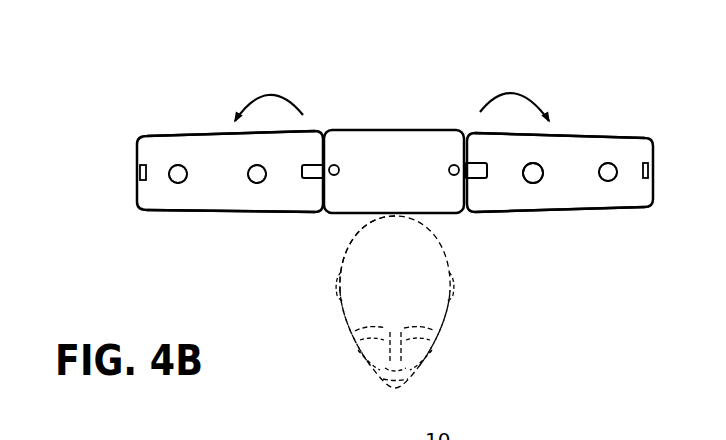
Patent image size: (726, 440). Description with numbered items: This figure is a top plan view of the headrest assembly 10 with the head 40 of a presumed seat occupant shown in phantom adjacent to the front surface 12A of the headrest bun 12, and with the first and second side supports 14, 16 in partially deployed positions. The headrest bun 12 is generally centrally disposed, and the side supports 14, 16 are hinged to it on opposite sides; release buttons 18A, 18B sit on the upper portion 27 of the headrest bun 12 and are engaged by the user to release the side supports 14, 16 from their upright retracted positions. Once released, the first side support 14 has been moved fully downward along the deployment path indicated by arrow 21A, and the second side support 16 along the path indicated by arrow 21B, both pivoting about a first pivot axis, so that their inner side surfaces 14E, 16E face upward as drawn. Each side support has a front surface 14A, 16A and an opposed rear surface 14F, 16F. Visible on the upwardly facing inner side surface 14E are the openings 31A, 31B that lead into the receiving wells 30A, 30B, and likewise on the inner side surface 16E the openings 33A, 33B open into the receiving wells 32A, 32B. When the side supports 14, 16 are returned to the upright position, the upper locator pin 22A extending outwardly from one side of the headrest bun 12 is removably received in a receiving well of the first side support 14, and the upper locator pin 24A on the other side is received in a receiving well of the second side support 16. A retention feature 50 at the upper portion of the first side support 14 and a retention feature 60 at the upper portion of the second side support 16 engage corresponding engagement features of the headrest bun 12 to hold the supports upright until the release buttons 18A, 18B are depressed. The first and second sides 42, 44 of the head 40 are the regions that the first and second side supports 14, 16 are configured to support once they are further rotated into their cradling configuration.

The headrest assembly 10 is at (423, 92).
The headrest bun 12 is at (387, 129).
The front surface 12A is at (398, 213).
The first side support 14 is at (131, 143).
The front surface 14A is at (223, 212).
The inner side surface 14E is at (228, 182).
The rear surface 14F is at (160, 137).
The second side support 16 is at (656, 140).
The front surface 16A is at (583, 212).
The inner side surface 16E is at (585, 187).
The rear surface 16F is at (597, 137).
The release button 18A is at (335, 165).
The release button 18B is at (454, 165).
The deployment path arrow 21A is at (245, 98).
The deployment path arrow 21B is at (512, 93).
The upper locator pin 22A is at (302, 178).
The upper locator pin 24A is at (479, 179).
The upper portion 27 is at (405, 185).
The receiving well 30A is at (178, 165).
The receiving well 30B is at (257, 165).
The opening 31A is at (178, 183).
The opening 31B is at (257, 183).
The receiving well 32A is at (610, 163).
The receiving well 32B is at (532, 164).
The opening 33A is at (610, 182).
The opening 33B is at (533, 183).
The head 40 is at (447, 343).
The first side 42 is at (348, 322).
The second side 44 is at (440, 322).
The retention feature 50 is at (143, 183).
The retention feature 60 is at (645, 182).